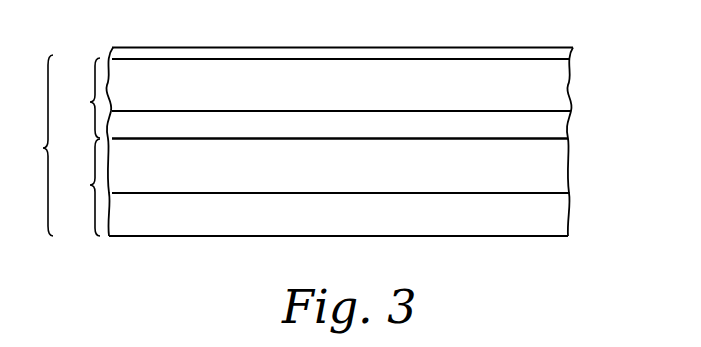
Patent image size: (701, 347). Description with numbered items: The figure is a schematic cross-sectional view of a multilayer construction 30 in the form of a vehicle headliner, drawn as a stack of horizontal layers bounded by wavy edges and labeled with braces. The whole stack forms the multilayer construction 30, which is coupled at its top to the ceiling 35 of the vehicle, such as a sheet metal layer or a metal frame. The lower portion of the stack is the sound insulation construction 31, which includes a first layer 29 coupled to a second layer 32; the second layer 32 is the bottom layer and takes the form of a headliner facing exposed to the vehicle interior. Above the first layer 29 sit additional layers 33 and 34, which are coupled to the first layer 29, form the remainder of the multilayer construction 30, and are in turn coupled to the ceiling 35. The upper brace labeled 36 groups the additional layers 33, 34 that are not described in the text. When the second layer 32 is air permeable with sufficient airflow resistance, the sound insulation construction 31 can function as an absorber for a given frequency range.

The first layer 29 is at (562, 166).
The multilayer construction 30 is at (30, 145).
The sound insulation construction 31 is at (78, 187).
The second layer 32 is at (562, 216).
The additional layer 33 is at (562, 89).
The additional layer 34 is at (562, 126).
The ceiling 35 is at (566, 57).
The upper layer group 36 is at (78, 98).